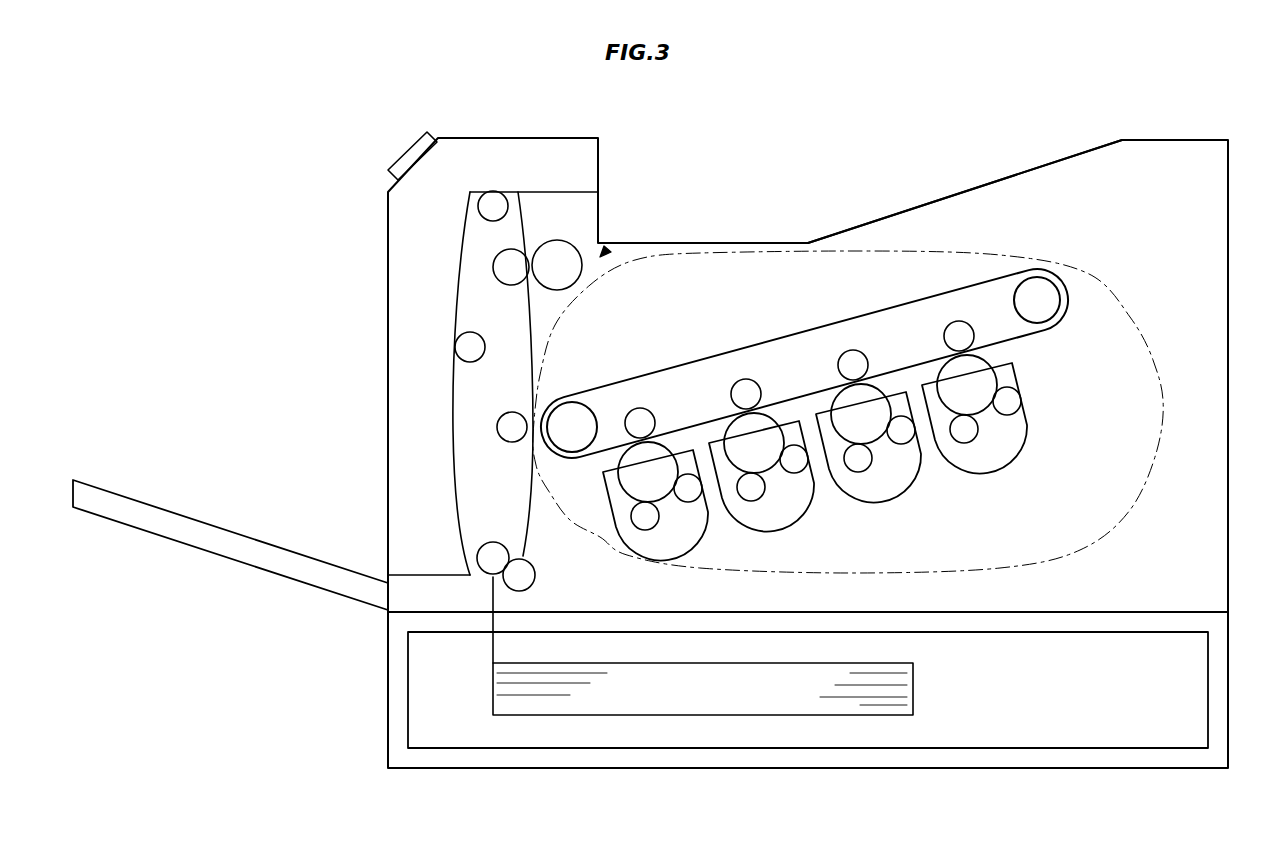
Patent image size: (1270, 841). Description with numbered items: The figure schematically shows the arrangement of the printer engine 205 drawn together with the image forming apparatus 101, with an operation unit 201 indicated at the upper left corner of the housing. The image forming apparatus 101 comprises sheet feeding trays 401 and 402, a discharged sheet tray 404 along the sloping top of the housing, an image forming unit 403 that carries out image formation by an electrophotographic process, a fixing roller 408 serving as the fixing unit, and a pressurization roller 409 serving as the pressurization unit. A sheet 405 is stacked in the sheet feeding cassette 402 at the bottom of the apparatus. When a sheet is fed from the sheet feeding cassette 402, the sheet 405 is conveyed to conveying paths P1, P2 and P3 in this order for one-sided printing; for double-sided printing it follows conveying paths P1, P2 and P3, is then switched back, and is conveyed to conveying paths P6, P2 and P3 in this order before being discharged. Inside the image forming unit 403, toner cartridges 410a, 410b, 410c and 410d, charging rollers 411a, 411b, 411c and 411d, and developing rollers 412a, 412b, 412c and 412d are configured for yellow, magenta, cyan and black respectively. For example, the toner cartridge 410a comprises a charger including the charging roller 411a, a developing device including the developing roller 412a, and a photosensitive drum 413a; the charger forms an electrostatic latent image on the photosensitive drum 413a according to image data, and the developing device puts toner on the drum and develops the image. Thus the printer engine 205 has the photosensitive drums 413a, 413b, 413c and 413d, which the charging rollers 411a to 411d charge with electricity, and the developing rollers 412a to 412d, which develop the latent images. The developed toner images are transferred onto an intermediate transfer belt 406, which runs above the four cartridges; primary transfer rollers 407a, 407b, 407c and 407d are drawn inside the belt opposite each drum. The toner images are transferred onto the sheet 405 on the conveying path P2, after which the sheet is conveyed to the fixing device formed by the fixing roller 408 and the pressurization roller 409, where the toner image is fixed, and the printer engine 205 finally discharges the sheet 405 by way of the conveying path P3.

The image forming apparatus 101 is at (1182, 140).
The operation unit 201 is at (400, 152).
The printer engine 205 is at (602, 254).
The sheet feeding tray 401 is at (140, 530).
The sheet feeding cassette 402 is at (406, 692).
The image forming unit 403 is at (1163, 403).
The discharged sheet tray 404 is at (873, 217).
The sheet 405 is at (913, 688).
The intermediate transfer belt 406 is at (1017, 262).
The primary transfer roller 407a is at (950, 323).
The primary transfer roller 407b is at (845, 352).
The primary transfer roller 407c is at (738, 381).
The primary transfer roller 407d is at (631, 411).
The fixing roller 408 is at (560, 240).
The pressurization roller 409 is at (495, 260).
The toner cartridge 410a is at (991, 478).
The toner cartridge 410b is at (885, 507).
The toner cartridge 410c is at (778, 538).
The toner cartridge 410d is at (672, 568).
The charging roller 411a is at (975, 441).
The charging roller 411b is at (869, 470).
The charging roller 411c is at (762, 499).
The charging roller 411d is at (655, 528).
The developing roller 412a is at (1005, 387).
The developing roller 412b is at (899, 416).
The developing roller 412c is at (792, 445).
The developing roller 412d is at (685, 474).
The photosensitive drum 413a is at (977, 397).
The photosensitive drum 413b is at (870, 423).
The photosensitive drum 413c is at (765, 452).
The photosensitive drum 413d is at (658, 482).
The conveying path P1 is at (493, 640).
The conveying path P2 is at (527, 507).
The conveying path P3 is at (550, 192).
The conveying path P6 is at (452, 383).